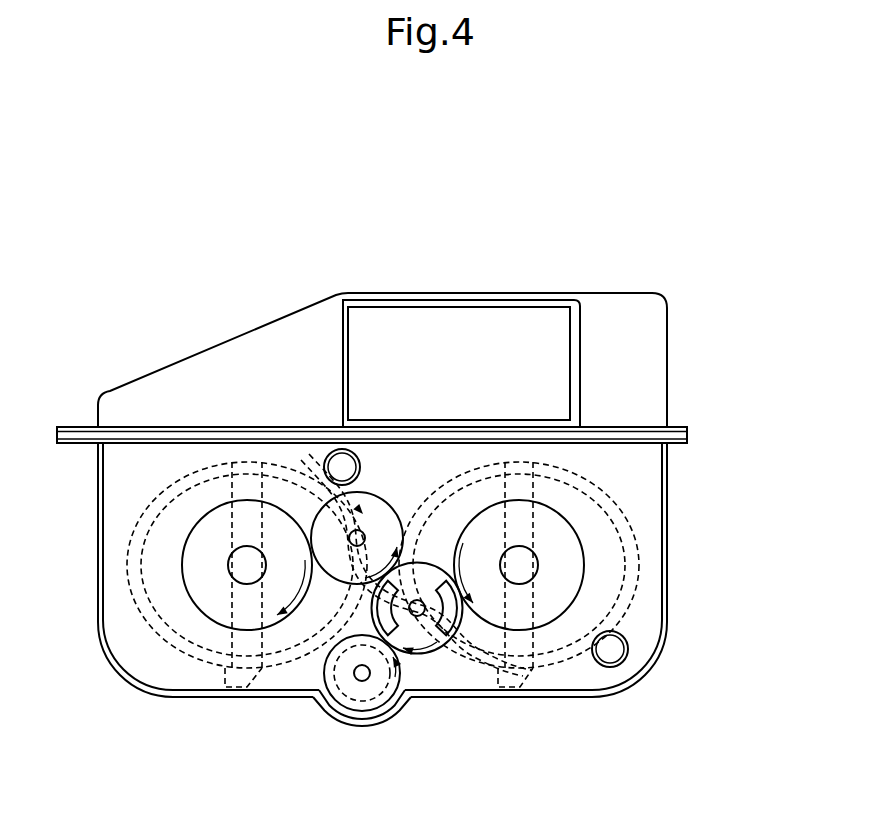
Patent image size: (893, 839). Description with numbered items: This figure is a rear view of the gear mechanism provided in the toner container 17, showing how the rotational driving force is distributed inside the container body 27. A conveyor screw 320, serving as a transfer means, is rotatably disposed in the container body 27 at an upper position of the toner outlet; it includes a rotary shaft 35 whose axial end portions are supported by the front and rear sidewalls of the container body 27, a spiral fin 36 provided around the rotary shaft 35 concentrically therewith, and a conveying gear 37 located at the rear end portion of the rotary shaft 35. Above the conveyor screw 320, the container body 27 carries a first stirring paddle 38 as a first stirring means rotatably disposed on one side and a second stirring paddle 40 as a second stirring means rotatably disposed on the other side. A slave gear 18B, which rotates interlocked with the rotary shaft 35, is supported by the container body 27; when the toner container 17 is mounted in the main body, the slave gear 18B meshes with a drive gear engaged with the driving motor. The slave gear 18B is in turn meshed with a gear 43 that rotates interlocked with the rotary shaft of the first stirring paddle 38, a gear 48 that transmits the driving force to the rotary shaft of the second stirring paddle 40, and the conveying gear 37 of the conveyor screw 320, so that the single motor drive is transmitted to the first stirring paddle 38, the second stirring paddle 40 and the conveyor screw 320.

The toner container 17 is at (419, 496).
The container body 27 is at (667, 588).
The first stirring paddle 38 is at (627, 482).
The second stirring paddle 40 is at (132, 488).
The gear 43 is at (563, 613).
The gear 48 is at (404, 517).
The slave gear 18B is at (433, 655).
The rotary shaft 35 is at (357, 681).
The spiral fin 36 is at (360, 702).
The conveying gear 37 is at (390, 703).
The conveyor screw 320 is at (320, 680).